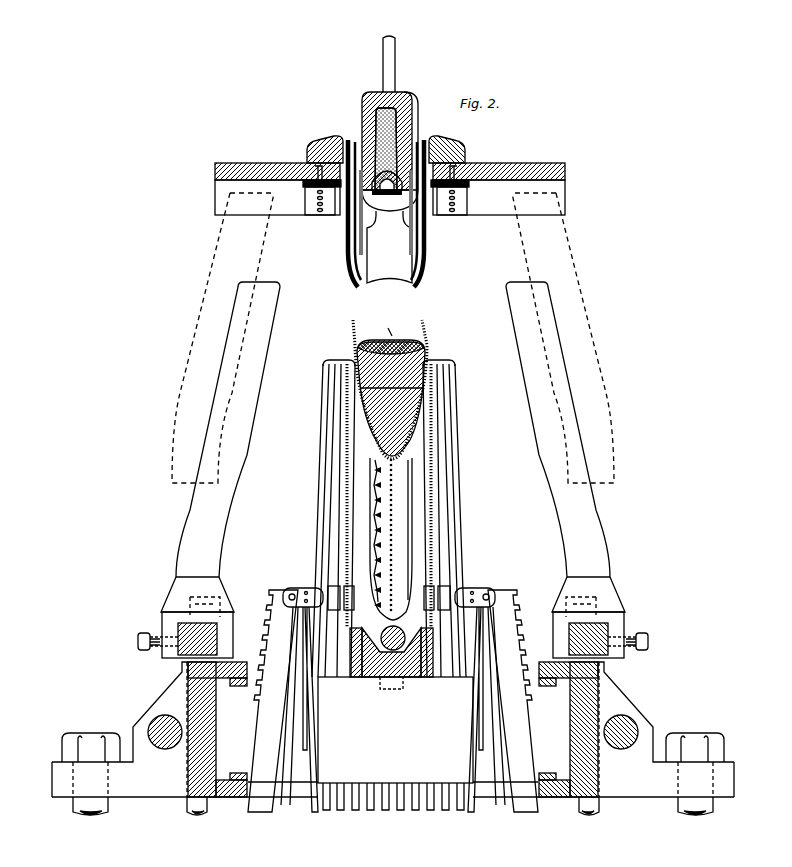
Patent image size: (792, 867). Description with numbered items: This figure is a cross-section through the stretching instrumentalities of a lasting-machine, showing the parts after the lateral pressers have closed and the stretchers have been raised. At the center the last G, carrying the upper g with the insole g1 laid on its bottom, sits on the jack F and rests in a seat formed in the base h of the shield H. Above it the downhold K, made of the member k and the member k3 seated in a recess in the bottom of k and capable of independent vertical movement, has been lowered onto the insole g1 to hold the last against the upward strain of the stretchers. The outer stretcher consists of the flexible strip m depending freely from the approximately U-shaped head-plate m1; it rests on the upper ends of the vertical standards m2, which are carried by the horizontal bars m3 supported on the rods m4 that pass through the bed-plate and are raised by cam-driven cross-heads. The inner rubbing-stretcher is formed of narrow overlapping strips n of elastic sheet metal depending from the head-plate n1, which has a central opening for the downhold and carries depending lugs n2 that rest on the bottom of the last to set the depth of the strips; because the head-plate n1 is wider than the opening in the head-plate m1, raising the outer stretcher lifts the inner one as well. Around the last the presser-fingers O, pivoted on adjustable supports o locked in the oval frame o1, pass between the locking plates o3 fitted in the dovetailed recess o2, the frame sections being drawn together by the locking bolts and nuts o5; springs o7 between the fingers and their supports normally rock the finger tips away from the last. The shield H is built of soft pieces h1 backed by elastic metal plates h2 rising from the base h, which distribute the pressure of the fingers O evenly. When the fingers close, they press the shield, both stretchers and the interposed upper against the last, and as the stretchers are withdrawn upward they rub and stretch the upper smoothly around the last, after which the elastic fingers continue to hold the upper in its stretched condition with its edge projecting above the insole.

The downhold K is at (360, 98).
The downhold member k is at (364, 117).
The downhold member k3 is at (394, 200).
The strips n is at (446, 252).
The head-plate n1 is at (332, 139).
The depending lugs n2 is at (359, 232).
The strip m is at (500, 163).
The head-plate m1 is at (292, 163).
The vertical standards m2 is at (393, 402).
The horizontal bars m3 is at (178, 628).
The rods m4 is at (186, 807).
The last G is at (432, 362).
The upper g is at (380, 520).
The insole g1 is at (388, 323).
The presser-fingers O is at (323, 428).
The adjustable supports o is at (393, 701).
The frame o1 is at (190, 690).
The dovetailed recess o2 is at (240, 686).
The locking plates o3 is at (395, 743).
The locking bolts and nuts o5 is at (393, 765).
The springs o7 is at (306, 737).
The shield H is at (412, 540).
The base h is at (386, 677).
The shield pieces h1 is at (352, 405).
The elastic metal plates h2 is at (370, 480).
The jack F is at (378, 627).